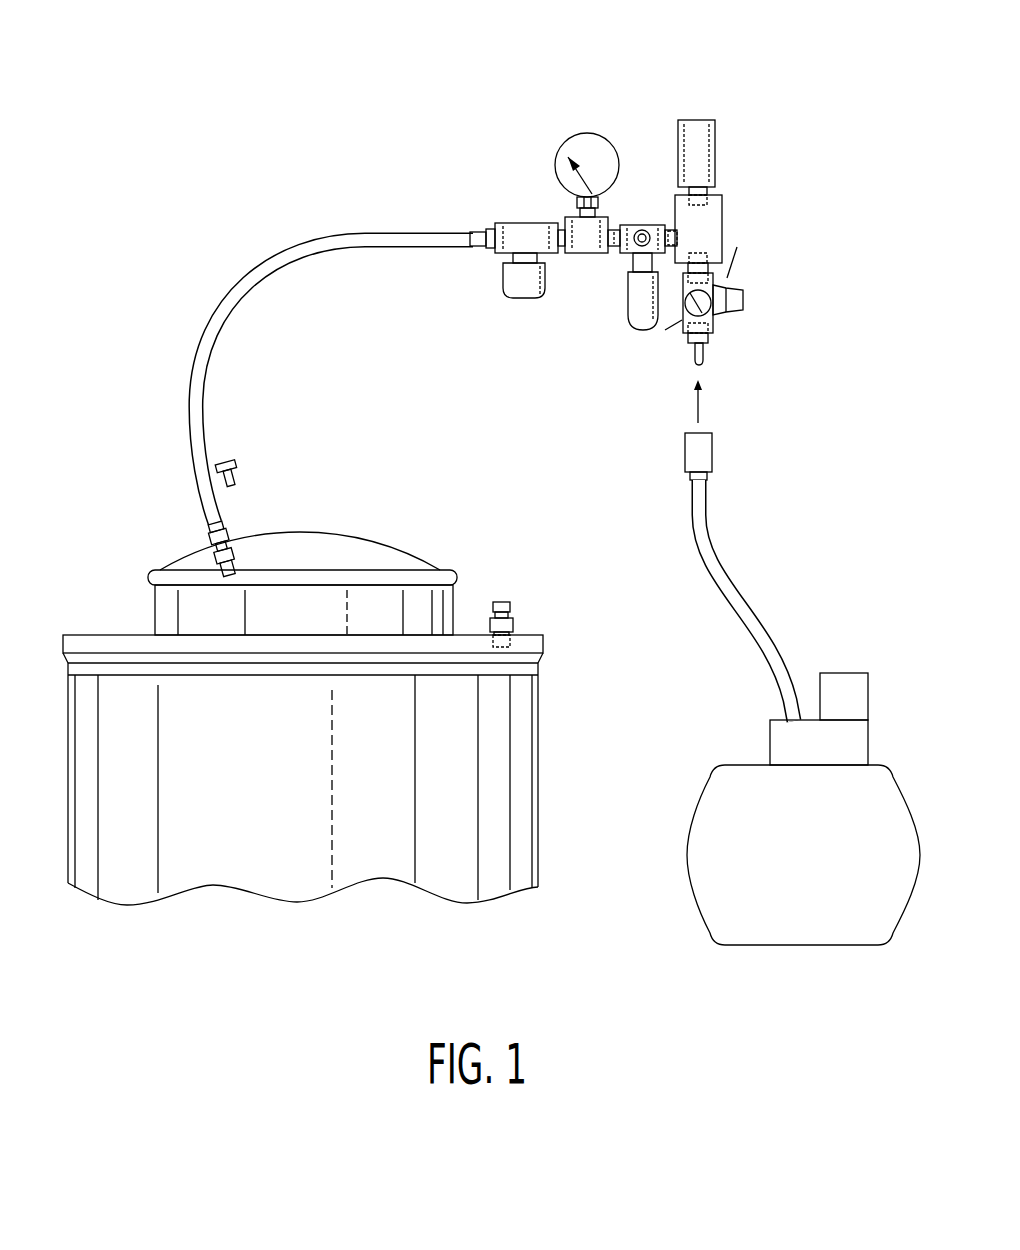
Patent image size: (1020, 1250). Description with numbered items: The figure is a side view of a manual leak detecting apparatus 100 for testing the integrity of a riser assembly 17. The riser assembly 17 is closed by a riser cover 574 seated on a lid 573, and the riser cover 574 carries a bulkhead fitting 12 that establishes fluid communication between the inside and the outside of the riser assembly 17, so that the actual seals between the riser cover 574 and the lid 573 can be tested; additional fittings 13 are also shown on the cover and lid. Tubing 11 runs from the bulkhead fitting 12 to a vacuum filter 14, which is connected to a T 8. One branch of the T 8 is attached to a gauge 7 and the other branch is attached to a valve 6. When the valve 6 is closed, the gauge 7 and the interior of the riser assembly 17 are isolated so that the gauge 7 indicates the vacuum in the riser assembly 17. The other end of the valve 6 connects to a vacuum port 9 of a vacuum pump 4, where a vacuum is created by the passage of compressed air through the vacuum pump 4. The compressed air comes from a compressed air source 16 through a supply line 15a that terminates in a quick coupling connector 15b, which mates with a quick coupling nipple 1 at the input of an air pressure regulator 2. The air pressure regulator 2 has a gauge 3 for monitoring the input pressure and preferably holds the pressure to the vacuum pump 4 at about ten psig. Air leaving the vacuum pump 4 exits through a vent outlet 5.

The apparatus 100 is at (288, 122).
The quick coupling nipple 1 is at (706, 360).
The air pressure regulator 2 is at (743, 300).
The gauge 3 is at (710, 312).
The vacuum pump 4 is at (722, 200).
The vent outlet 5 is at (715, 152).
The valve 6 is at (637, 310).
The gauge 7 is at (572, 138).
The T 8 is at (580, 228).
The vacuum port 9 is at (683, 237).
The tubing 11 is at (250, 293).
The bulkhead fitting 12 is at (208, 542).
The plug fitting 13 is at (237, 463).
The vacuum filter 14 is at (506, 297).
The supply line 15a is at (740, 600).
The quick coupling connector 15b is at (710, 453).
The compressed air source 16 is at (738, 858).
The riser assembly 17 is at (540, 767).
The lid 573 is at (542, 645).
The riser cover 574 is at (368, 542).